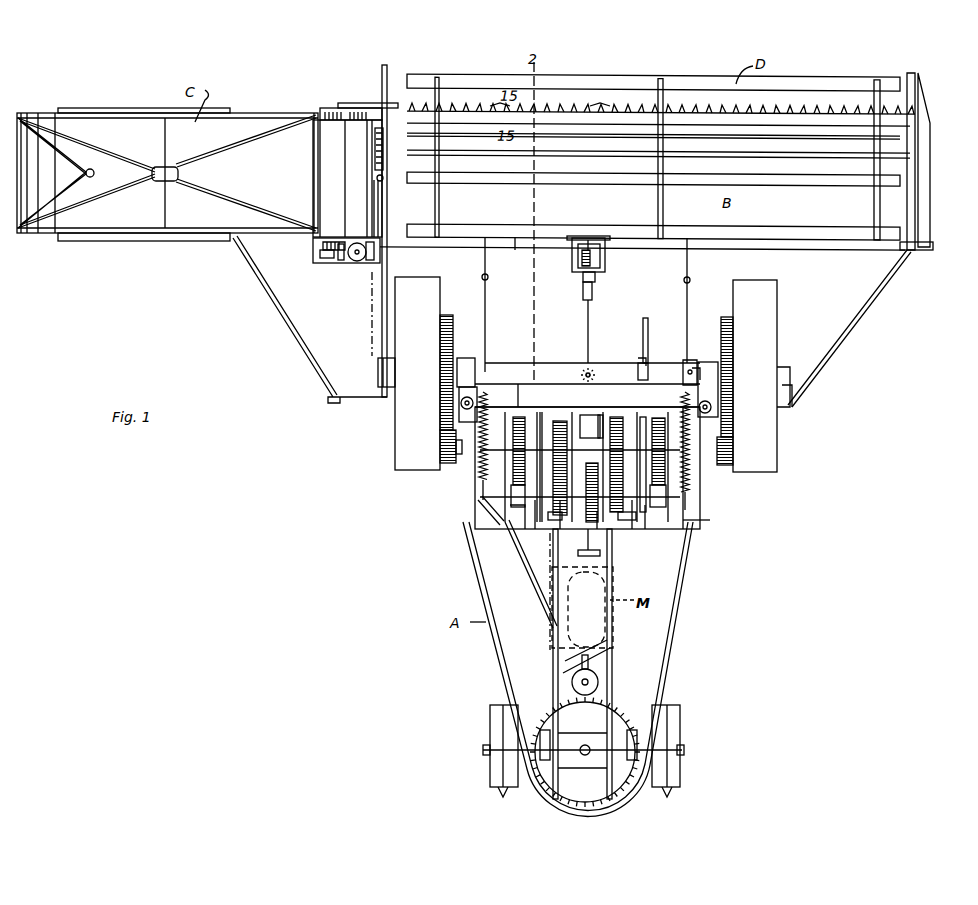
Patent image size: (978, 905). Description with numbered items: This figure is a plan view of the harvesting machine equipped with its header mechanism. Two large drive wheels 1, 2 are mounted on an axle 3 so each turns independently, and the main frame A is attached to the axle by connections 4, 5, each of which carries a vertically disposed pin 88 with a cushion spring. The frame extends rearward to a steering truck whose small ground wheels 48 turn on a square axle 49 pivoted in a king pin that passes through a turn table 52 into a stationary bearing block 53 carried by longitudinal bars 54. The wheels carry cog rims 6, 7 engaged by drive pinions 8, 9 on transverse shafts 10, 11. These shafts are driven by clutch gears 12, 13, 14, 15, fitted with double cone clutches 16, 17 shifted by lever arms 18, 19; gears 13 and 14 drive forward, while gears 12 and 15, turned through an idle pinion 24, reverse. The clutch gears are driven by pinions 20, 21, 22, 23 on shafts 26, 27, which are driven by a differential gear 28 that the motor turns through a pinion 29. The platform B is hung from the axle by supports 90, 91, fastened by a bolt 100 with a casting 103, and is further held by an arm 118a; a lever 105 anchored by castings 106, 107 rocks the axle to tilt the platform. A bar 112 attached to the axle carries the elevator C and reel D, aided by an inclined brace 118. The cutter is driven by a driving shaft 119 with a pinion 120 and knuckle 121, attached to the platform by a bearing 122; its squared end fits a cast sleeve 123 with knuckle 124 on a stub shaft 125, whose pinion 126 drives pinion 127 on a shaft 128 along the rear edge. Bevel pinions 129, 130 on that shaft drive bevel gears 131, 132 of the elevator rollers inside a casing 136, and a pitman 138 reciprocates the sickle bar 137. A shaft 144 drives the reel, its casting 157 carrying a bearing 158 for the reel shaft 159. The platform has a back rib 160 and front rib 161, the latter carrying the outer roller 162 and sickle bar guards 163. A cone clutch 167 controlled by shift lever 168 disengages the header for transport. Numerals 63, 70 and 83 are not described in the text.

The drive wheel 1 is at (765, 325).
The drive wheel 2 is at (393, 447).
The axle 3 is at (518, 380).
The connection 4 is at (712, 362).
The connection 5 is at (466, 360).
The cog rim 6 is at (728, 318).
The cog rim 7 is at (388, 127).
The drive pinion 8 is at (727, 486).
The drive pinion 9 is at (443, 468).
The transverse shaft 10 is at (722, 438).
The transverse shaft 11 is at (458, 460).
The clutch gear 12 is at (658, 418).
The clutch gear 13 is at (616, 417).
The clutch gear 14 is at (560, 420).
The clutch gear 15 is at (517, 417).
The double cone clutch 16 is at (640, 417).
The double cone clutch 17 is at (538, 412).
The lever arm 18 is at (632, 529).
The lever arm 19 is at (540, 529).
The pinion 20 is at (625, 520).
The pinion 21 is at (560, 529).
The pinion 22 is at (690, 530).
The pinion 23 is at (515, 520).
The idle pinion 24 is at (480, 515).
The shaft 26 is at (647, 520).
The shaft 27 is at (552, 520).
The differential gear 28 is at (597, 529).
The pinion 29 is at (588, 553).
The ground wheel 48 is at (492, 763).
The axle 49 is at (484, 748).
The turn table 52 is at (602, 788).
The bearing block 53 is at (602, 731).
The longitudinal bar 54 is at (555, 683).
The diagonal brace 63 is at (551, 620).
The drive gear 70 is at (636, 708).
The axle bearing 83 is at (640, 732).
The pin 88 is at (460, 403).
The support 90 is at (487, 292).
The support 91 is at (690, 258).
The bolt 100 is at (487, 372).
The casting 103 is at (490, 363).
The lever 105 is at (643, 328).
The casting 106 is at (640, 363).
The casting 107 is at (640, 375).
The bar 112 is at (388, 266).
The inclined brace 118 is at (291, 330).
The arm 118a is at (840, 335).
The driving shaft 119 is at (586, 325).
The pinion 120 is at (585, 492).
The knuckle 121 is at (583, 368).
The bearing 122 is at (605, 250).
The cast sleeve 123 is at (595, 295).
The knuckle 124 is at (598, 278).
The stub shaft 125 is at (590, 240).
The pinion 126 is at (605, 265).
The pinion 127 is at (580, 268).
The shaft 128 is at (515, 248).
The bevel pinion 129 is at (368, 262).
The bevel pinion 130 is at (340, 262).
The bevel gear 131 is at (355, 262).
The bevel gear 132 is at (325, 254).
The casing 136 is at (312, 245).
The sickle bar 137 is at (600, 105).
The pitman 138 is at (383, 100).
The shaft 144 is at (378, 209).
The casting 157 is at (385, 162).
The bearing 158 is at (388, 146).
The reel shaft 159 is at (592, 184).
The back rib 160 is at (856, 246).
The front rib 161 is at (832, 122).
The outer roller 162 is at (930, 200).
The sickle bar guard 163 is at (500, 103).
The cone clutch 167 is at (601, 415).
The shift lever 168 is at (585, 415).